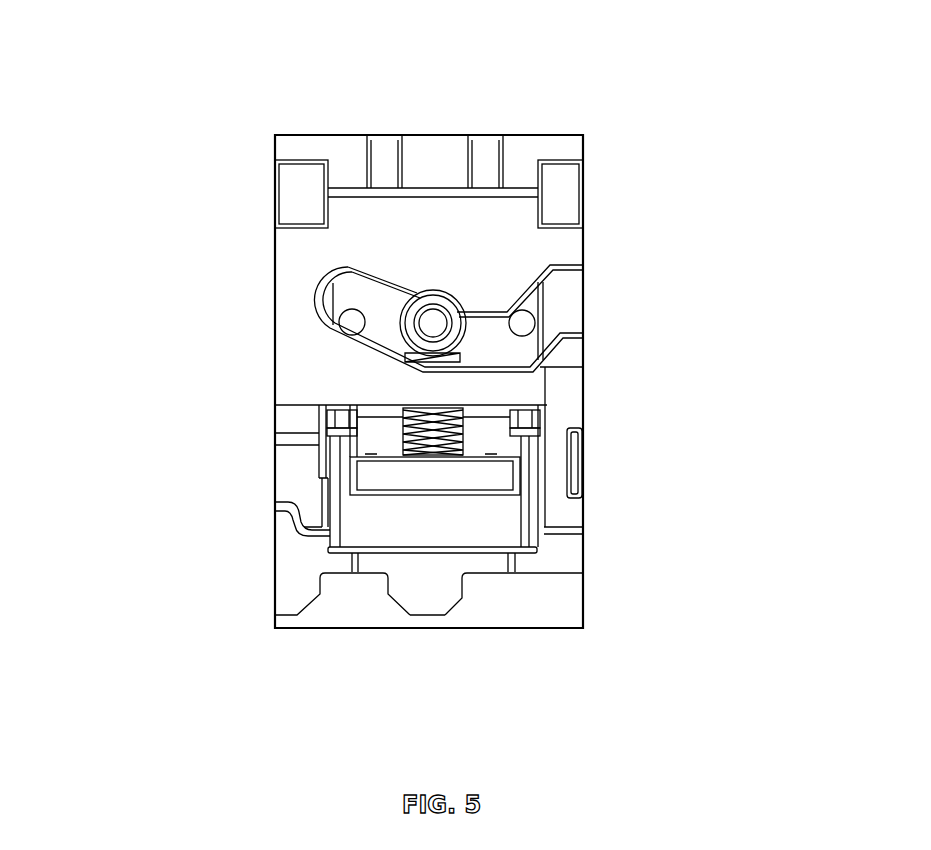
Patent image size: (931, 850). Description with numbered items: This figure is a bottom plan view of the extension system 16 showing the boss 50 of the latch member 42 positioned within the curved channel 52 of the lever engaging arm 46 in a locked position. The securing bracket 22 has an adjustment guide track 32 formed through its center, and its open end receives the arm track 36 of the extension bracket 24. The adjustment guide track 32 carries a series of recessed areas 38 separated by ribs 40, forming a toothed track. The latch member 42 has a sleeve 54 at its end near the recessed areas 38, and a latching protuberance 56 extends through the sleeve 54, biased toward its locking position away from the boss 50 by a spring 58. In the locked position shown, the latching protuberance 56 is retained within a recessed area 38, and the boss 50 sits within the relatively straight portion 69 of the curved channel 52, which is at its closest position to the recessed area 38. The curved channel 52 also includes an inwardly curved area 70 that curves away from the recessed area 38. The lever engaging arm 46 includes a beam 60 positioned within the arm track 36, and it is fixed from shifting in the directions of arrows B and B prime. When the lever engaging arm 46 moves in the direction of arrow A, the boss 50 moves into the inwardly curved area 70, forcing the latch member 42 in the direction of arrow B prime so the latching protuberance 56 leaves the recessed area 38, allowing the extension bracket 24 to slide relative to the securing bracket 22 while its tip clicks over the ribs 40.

The extension system 16 is at (188, 67).
The securing bracket 22 is at (337, 590).
The extension bracket 24 is at (523, 277).
The adjustment guide track 32 is at (292, 621).
The arm track 36 is at (288, 157).
The recessed area 38 is at (470, 582).
The rib 40 is at (383, 575).
The latch member 42 is at (500, 540).
The lever engaging arm 46 is at (295, 250).
The boss 50 is at (433, 323).
The curved channel 52 is at (567, 288).
The sleeve 54 is at (350, 540).
The latching protuberance 56 is at (462, 588).
The spring 58 is at (460, 427).
The beam 60 is at (500, 210).
The relatively straight portion 69 is at (517, 368).
The inwardly curved area 70 is at (352, 322).